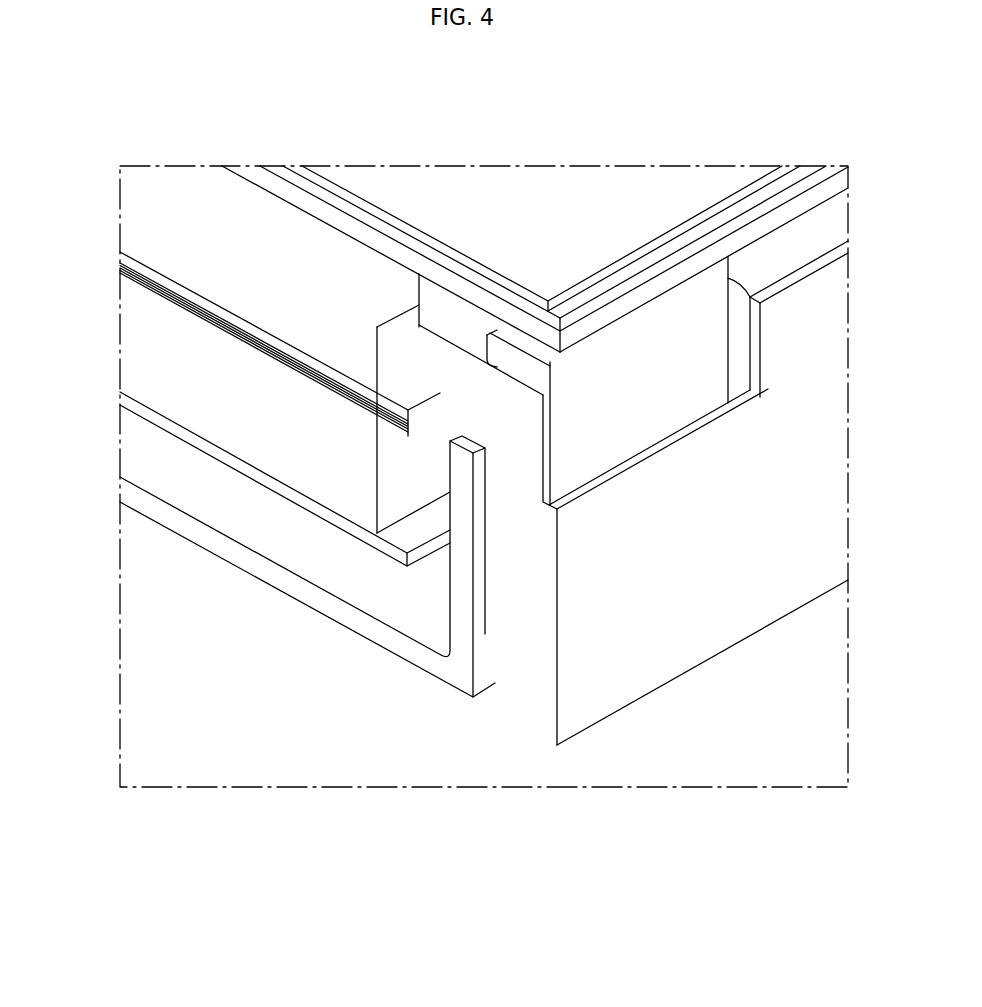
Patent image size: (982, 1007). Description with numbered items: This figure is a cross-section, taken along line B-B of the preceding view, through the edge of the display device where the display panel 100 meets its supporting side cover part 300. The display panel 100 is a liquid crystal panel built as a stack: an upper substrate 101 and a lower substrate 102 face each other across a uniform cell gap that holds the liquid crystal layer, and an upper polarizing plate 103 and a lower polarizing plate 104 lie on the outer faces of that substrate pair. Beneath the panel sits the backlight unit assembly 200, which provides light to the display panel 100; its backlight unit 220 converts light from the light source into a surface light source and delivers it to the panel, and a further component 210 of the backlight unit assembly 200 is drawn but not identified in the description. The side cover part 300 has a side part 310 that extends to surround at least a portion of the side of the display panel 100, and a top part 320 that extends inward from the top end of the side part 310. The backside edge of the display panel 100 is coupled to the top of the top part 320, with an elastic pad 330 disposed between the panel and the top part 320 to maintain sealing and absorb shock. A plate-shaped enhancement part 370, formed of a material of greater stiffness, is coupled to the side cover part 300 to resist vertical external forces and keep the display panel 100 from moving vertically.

The display panel 100 is at (368, 96).
The upper substrate 101 is at (412, 246).
The lower substrate 102 is at (450, 285).
The upper polarizing plate 103 is at (371, 210).
The lower polarizing plate 104 is at (498, 326).
The backlight unit assembly 200 is at (259, 544).
The lower support bar 210 is at (222, 541).
The backlight unit 220 is at (243, 412).
The side cover part 300 is at (629, 543).
The side part 310 is at (485, 634).
The top part 320 is at (443, 388).
The elastic pad 330 is at (385, 319).
The enhancement part 370 is at (680, 368).